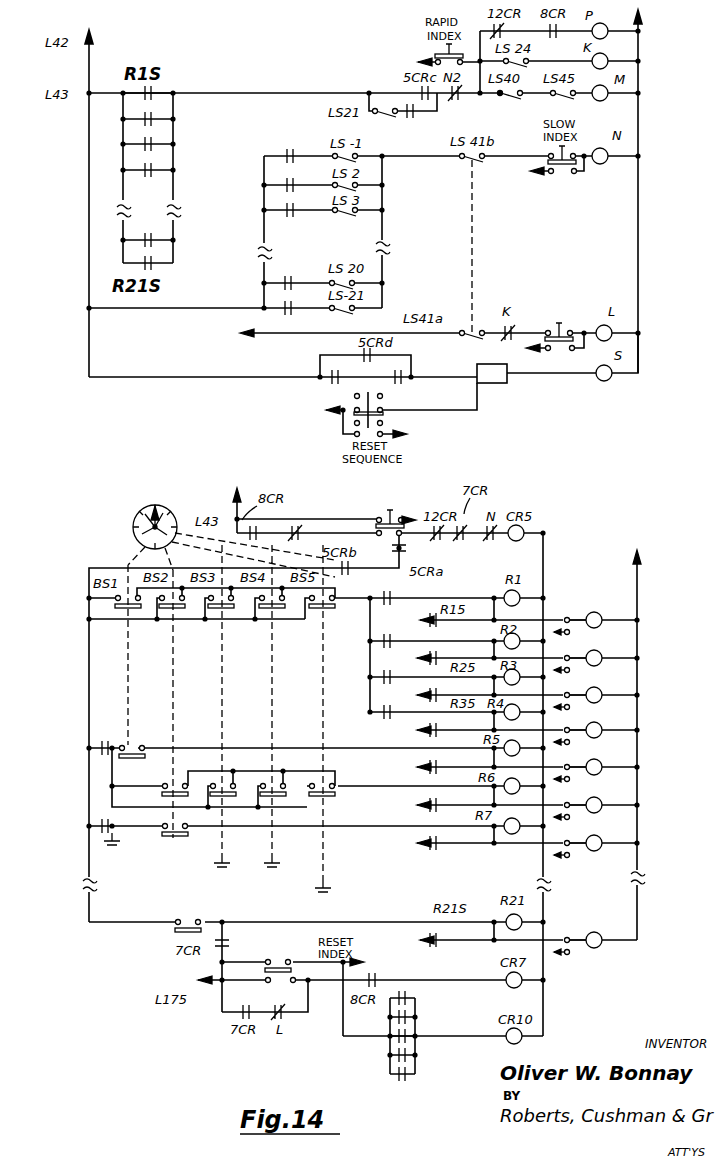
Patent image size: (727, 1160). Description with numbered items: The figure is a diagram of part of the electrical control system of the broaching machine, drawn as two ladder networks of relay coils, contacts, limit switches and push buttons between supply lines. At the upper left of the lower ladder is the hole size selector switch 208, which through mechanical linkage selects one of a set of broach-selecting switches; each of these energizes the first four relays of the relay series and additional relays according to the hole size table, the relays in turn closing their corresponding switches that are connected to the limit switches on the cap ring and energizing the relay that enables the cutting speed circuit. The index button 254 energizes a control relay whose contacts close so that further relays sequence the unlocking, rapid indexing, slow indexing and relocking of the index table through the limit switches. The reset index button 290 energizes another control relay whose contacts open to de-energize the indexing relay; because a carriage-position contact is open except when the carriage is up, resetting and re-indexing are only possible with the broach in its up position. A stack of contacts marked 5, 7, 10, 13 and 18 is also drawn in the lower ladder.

The hole size selector switch 208 is at (134, 522).
The index button 254 is at (390, 510).
The reset index button 290 is at (296, 952).
The contact 5 is at (413, 996).
The contact 7 is at (413, 1016).
The contact 10 is at (413, 1034).
The contact 13 is at (413, 1053).
The contact 18 is at (413, 1072).